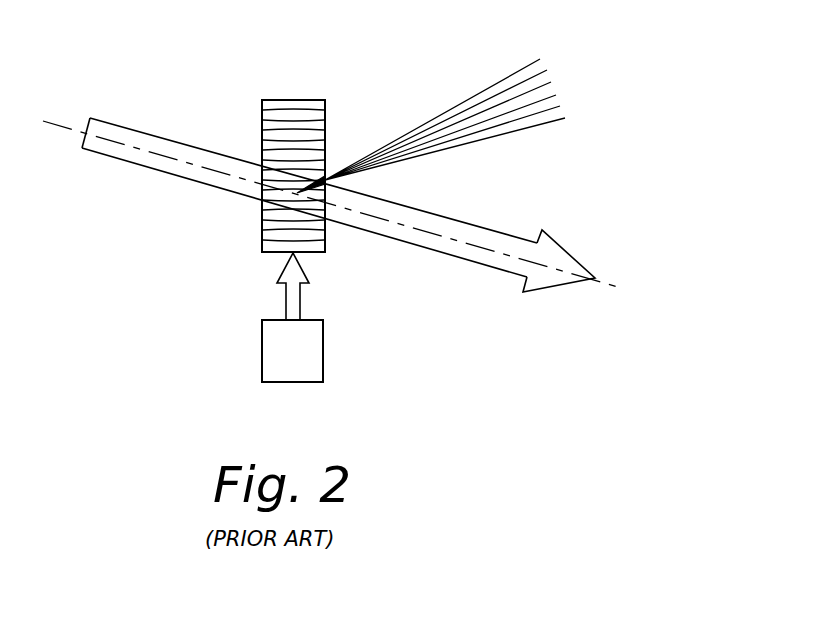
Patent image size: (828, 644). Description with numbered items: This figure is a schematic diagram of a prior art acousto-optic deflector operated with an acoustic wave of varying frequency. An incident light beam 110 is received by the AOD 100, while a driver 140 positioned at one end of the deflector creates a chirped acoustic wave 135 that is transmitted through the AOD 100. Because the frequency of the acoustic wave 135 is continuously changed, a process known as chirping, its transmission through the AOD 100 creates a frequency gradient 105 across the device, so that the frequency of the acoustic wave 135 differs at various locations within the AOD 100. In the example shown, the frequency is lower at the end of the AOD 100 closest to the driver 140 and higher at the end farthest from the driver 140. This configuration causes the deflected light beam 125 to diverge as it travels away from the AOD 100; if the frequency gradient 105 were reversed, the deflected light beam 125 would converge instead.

The AOD 100 is at (295, 98).
The frequency gradient 105 is at (272, 111).
The incident light beam 110 is at (128, 127).
The deflected light beam 125 is at (492, 87).
The chirped acoustic wave 135 is at (286, 302).
The driver 140 is at (262, 350).